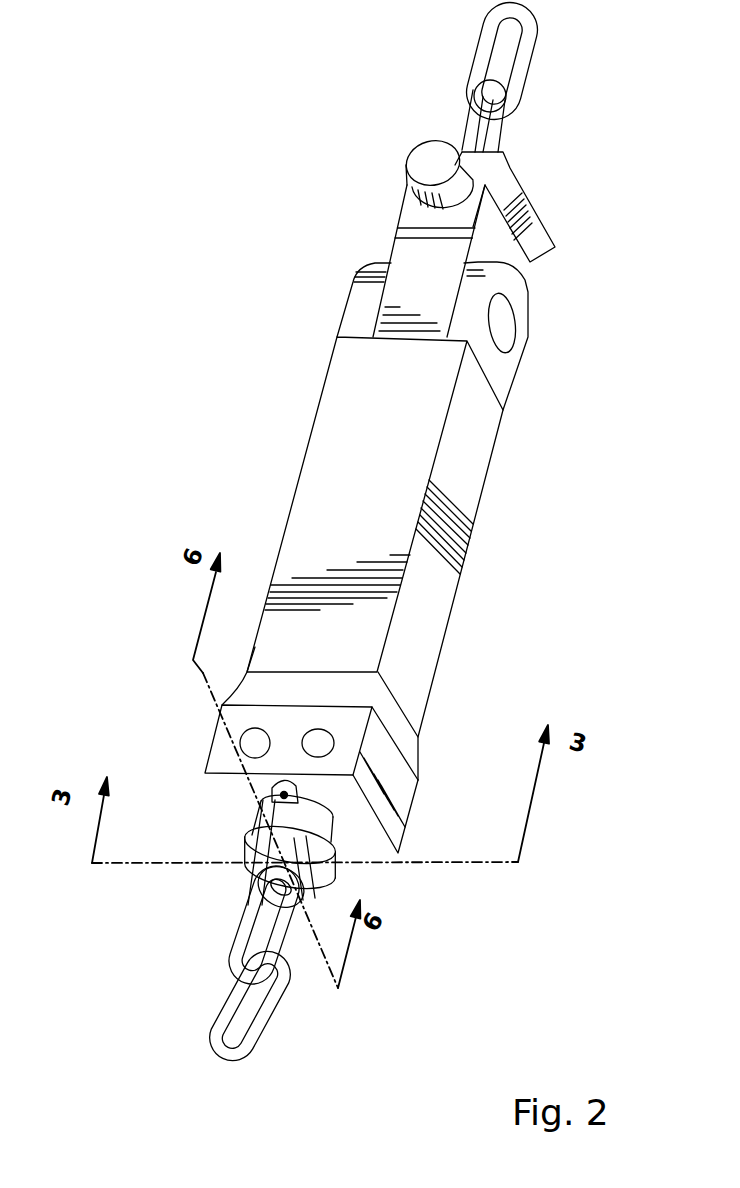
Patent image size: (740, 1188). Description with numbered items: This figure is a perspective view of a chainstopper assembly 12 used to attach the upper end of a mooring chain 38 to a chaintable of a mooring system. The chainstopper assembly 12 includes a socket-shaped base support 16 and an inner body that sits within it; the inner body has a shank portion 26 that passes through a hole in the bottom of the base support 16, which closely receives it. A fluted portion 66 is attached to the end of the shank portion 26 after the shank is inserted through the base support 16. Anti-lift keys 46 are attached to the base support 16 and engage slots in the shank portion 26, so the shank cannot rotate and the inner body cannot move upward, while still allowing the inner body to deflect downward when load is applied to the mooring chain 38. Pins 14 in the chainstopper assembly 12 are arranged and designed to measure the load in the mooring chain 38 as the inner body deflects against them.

The chainstopper assembly 12 is at (190, 385).
The pins 14 is at (252, 743).
The base support 16 is at (398, 778).
The shank portion 26 is at (323, 825).
The mooring chain 38 is at (278, 1003).
The anti-lift keys 46 is at (272, 790).
The fluted portion 66 is at (338, 868).